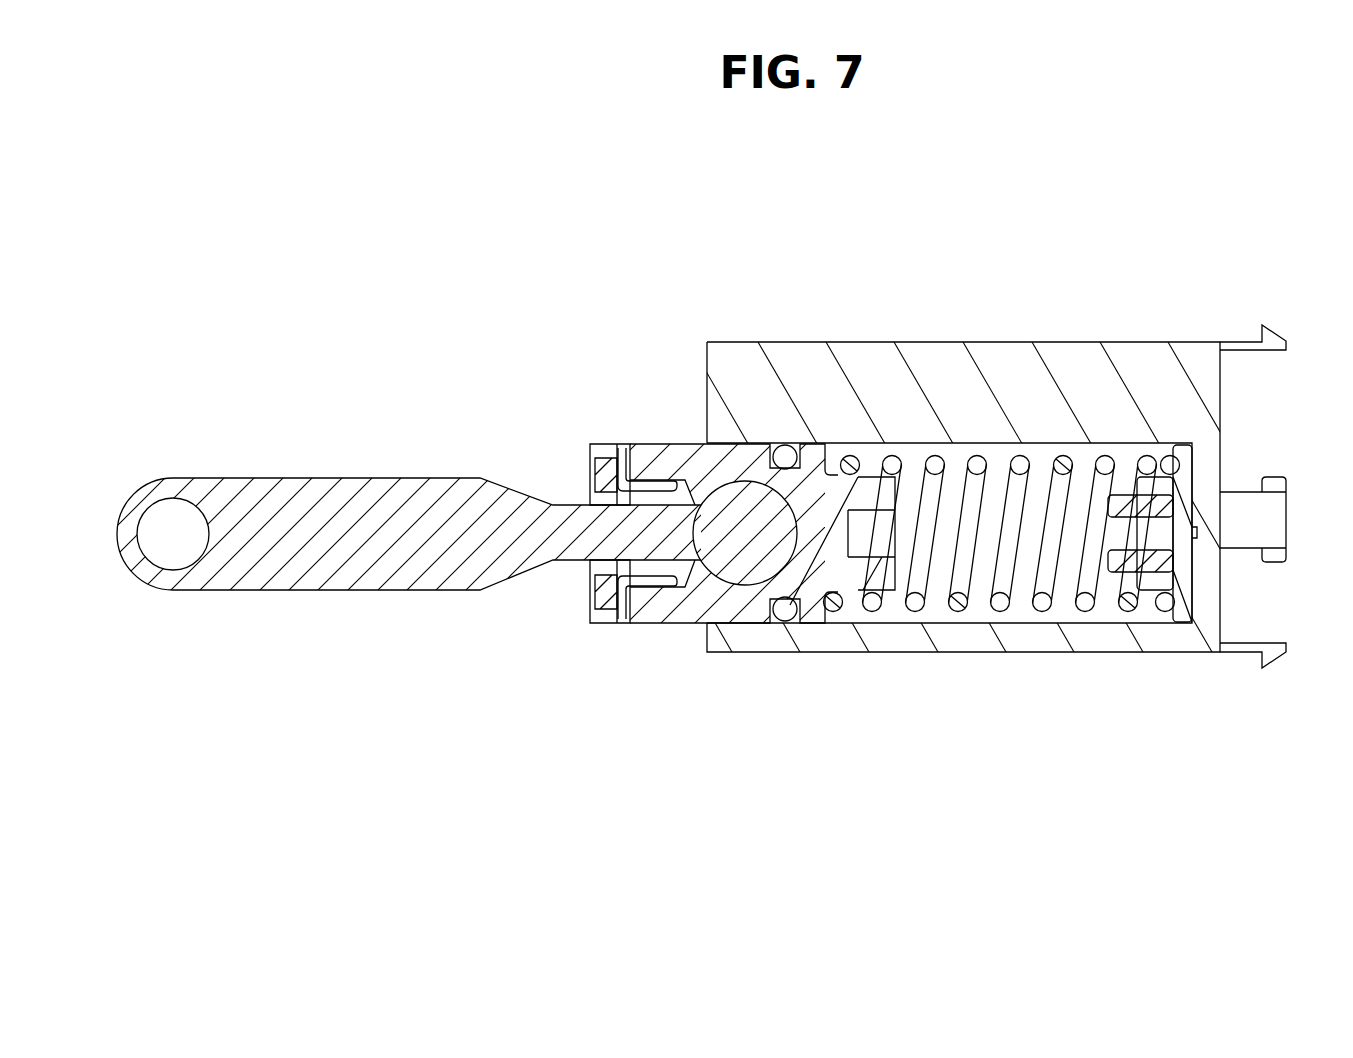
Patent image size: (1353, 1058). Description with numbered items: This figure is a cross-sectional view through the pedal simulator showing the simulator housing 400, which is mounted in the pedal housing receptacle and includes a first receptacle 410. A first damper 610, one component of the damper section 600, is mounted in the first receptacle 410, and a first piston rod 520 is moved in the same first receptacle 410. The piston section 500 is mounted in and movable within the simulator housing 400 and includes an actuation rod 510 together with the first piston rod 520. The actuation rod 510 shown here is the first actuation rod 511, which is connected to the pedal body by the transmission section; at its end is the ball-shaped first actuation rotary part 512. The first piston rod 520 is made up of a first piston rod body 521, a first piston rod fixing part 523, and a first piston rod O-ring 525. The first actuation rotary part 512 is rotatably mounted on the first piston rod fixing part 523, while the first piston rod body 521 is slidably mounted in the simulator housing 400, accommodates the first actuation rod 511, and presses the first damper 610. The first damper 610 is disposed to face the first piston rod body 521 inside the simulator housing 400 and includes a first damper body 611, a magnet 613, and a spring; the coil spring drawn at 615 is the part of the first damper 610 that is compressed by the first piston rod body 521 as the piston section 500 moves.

The simulator housing 400 is at (1070, 340).
The first receptacle 410 is at (978, 445).
The piston section 500 is at (452, 725).
The actuation rod 510 is at (348, 347).
The first actuation rod 511 is at (270, 478).
The first actuation rotary part 512 is at (737, 530).
The first piston rod 520 is at (733, 755).
The first piston rod body 521 is at (695, 605).
The first piston rod fixing part 523 is at (665, 600).
The first piston rod O-ring 525 is at (785, 608).
The damper section 600 is at (1205, 855).
The first damper 610 is at (1100, 750).
The first damper body 611 is at (1180, 607).
The magnet 613 is at (1128, 570).
The coil spring 615 is at (1000, 603).